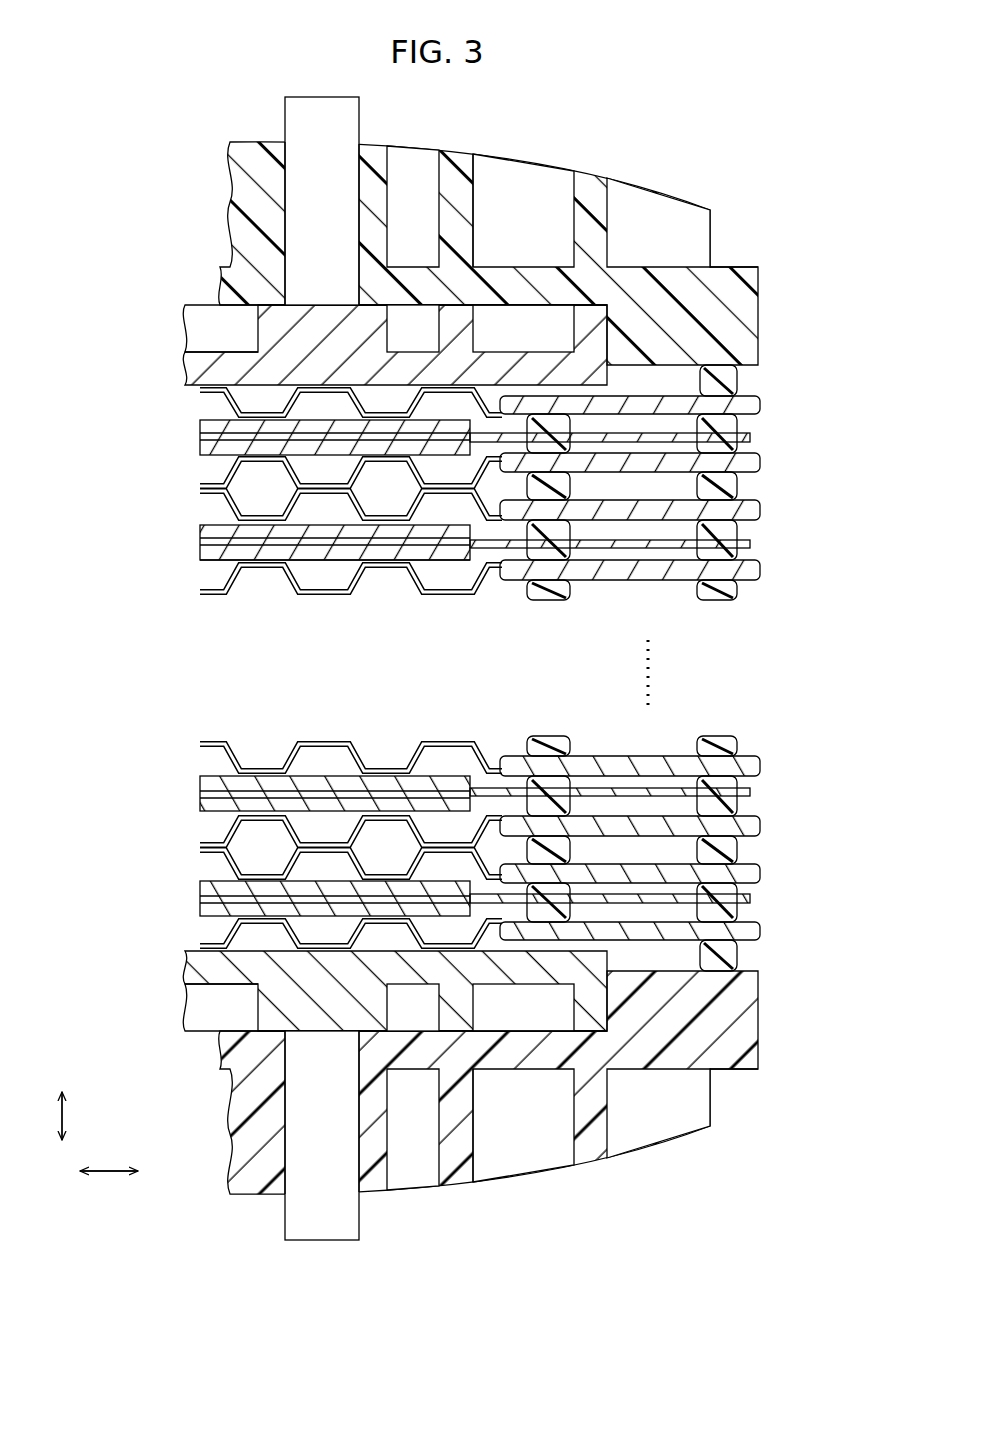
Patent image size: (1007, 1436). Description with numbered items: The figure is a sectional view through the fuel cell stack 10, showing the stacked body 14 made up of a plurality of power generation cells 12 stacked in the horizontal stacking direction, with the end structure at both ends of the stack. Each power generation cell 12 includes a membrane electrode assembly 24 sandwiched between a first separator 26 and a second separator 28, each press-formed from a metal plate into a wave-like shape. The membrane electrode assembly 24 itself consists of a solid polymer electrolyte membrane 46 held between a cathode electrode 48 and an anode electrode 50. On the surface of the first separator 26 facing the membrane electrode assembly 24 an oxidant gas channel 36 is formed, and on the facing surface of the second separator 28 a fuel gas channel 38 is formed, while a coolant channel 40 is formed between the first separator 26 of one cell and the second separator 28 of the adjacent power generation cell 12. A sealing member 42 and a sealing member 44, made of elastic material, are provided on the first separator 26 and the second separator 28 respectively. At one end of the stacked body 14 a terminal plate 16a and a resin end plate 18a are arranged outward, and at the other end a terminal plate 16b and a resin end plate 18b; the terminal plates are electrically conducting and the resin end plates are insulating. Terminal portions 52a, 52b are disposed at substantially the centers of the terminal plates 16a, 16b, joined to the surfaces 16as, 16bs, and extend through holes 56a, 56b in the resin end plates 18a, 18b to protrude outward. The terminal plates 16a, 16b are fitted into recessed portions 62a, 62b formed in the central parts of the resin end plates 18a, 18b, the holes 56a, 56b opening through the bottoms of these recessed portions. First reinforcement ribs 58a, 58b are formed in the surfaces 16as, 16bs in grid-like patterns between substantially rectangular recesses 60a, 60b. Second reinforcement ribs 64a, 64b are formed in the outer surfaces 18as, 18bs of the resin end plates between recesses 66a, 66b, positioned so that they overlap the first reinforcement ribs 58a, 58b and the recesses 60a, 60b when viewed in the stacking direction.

The fuel cell stack 10 is at (372, 93).
The power generation cell 12 is at (128, 590).
The stacked body 14 is at (92, 627).
The terminal plate 16a is at (183, 990).
The terminal plate 16b is at (183, 348).
The surface of terminal plate 16as is at (598, 1033).
The surface of terminal plate 16bs is at (598, 303).
The resin end plate 18a is at (762, 1071).
The resin end plate 18b is at (762, 266).
The outer surface of resin end plate 18as is at (745, 1070).
The outer surface of resin end plate 18bs is at (745, 266).
The membrane electrode assembly 24 is at (298, 552).
The first separator 26 is at (220, 504).
The second separator 28 is at (220, 577).
The oxidant gas channel 36 is at (298, 514).
The fuel gas channel 38 is at (338, 586).
The coolant channel 40 is at (430, 506).
The sealing member 42 is at (758, 507).
The sealing member 44 is at (758, 566).
The solid polymer electrolyte membrane 46 is at (400, 546).
The cathode electrode 48 is at (435, 534).
The anode electrode 50 is at (455, 645).
The terminal portion 52a is at (325, 1234).
The terminal portion 52b is at (325, 103).
The hole 56a is at (286, 1121).
The hole 56b is at (286, 215).
The first reinforcement rib 58a is at (438, 1009).
The first reinforcement rib 58b is at (438, 328).
The recess 60a is at (493, 1009).
The recess 60b is at (493, 328).
The recessed portion 62a is at (530, 1014).
The recessed portion 62b is at (530, 322).
The second reinforcement rib 64a is at (606, 1133).
The second reinforcement rib 64b is at (606, 203).
The recess 66a is at (435, 1168).
The recess 66b is at (478, 190).